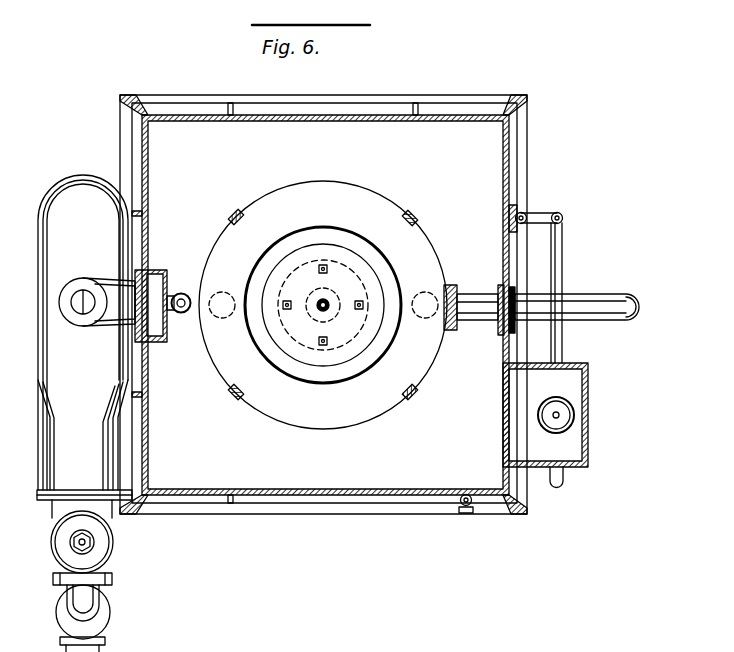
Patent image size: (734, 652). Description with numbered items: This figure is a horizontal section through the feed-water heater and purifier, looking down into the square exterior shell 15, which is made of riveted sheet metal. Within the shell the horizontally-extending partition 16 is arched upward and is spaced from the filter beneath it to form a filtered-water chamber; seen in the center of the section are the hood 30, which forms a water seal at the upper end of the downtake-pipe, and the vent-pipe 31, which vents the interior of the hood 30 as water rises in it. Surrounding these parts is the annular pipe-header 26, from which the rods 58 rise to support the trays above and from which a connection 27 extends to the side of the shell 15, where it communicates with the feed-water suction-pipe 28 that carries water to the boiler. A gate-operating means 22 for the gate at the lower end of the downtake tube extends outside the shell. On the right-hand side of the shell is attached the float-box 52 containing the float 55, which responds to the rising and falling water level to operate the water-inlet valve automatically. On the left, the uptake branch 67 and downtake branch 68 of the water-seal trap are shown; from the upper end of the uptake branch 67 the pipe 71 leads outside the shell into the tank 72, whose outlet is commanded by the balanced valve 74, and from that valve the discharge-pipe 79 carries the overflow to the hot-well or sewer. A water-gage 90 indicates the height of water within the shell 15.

The exterior shell 15 is at (142, 152).
The horizontally-extending partition 16 is at (323, 301).
The gate-operating means 22 is at (562, 291).
The annular pipe-header 26 is at (404, 218).
The connection 27 is at (473, 322).
The feed-water suction-pipe 28 is at (588, 318).
The hood 30 is at (323, 305).
The vent-pipe 31 is at (326, 309).
The float-box 52 is at (588, 452).
The float 55 is at (574, 413).
The rods 58 is at (416, 218).
The uptake branch 67 is at (162, 274).
The downtake branch 68 is at (181, 313).
The pipe 71 is at (97, 302).
The tank 72 is at (83, 332).
The balanced valve 74 is at (108, 543).
The discharge-pipe 79 is at (94, 606).
The water-gage 90 is at (463, 507).